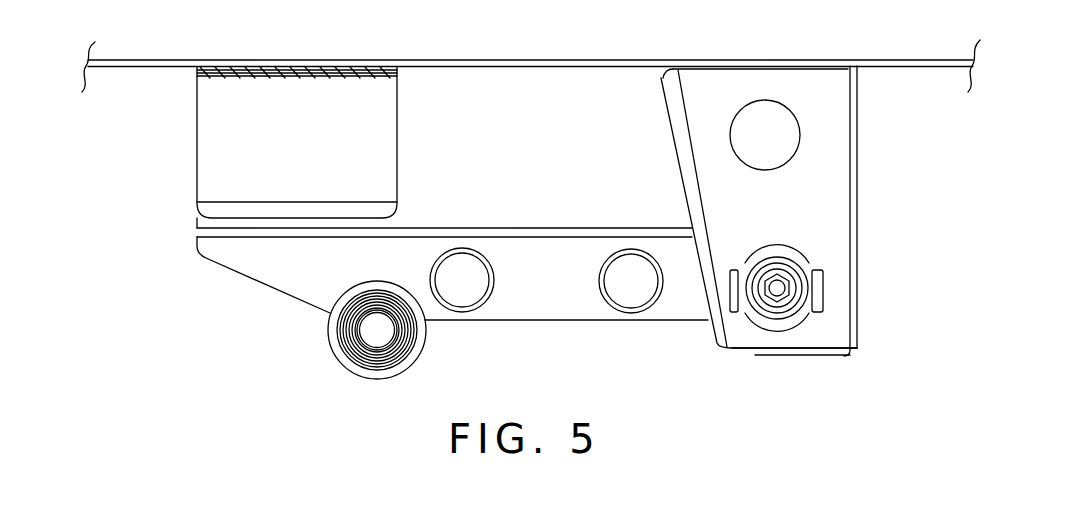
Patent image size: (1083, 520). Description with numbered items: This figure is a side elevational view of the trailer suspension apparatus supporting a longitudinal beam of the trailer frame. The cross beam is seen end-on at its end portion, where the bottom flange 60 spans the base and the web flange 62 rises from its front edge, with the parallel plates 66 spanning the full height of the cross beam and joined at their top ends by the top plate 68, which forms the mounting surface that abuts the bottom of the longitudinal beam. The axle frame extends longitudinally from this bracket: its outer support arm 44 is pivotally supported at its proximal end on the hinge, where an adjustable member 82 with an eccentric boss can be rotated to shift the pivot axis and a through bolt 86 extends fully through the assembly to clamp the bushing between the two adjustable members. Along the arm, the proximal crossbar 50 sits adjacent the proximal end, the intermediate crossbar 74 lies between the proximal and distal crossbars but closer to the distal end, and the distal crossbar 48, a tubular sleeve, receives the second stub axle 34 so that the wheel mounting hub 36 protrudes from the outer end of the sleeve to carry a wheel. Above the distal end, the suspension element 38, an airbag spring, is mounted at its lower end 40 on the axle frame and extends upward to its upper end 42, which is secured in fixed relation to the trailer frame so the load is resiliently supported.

The second stub axle 34 is at (334, 368).
The wheel mounting hub 36 is at (372, 335).
The suspension element 38 is at (322, 164).
The lower end 40 is at (197, 228).
The upper end 42 is at (200, 70).
The outer support arm 44 is at (547, 302).
The distal crossbar 48 is at (372, 378).
The proximal crossbar 50 is at (625, 253).
The bottom flange 60 is at (813, 353).
The web flange 62 is at (797, 178).
The parallel plates 66 is at (827, 183).
The top plate 68 is at (747, 65).
The intermediate crossbar 74 is at (462, 250).
The adjustable member 82 is at (813, 324).
The through bolt 86 is at (777, 288).